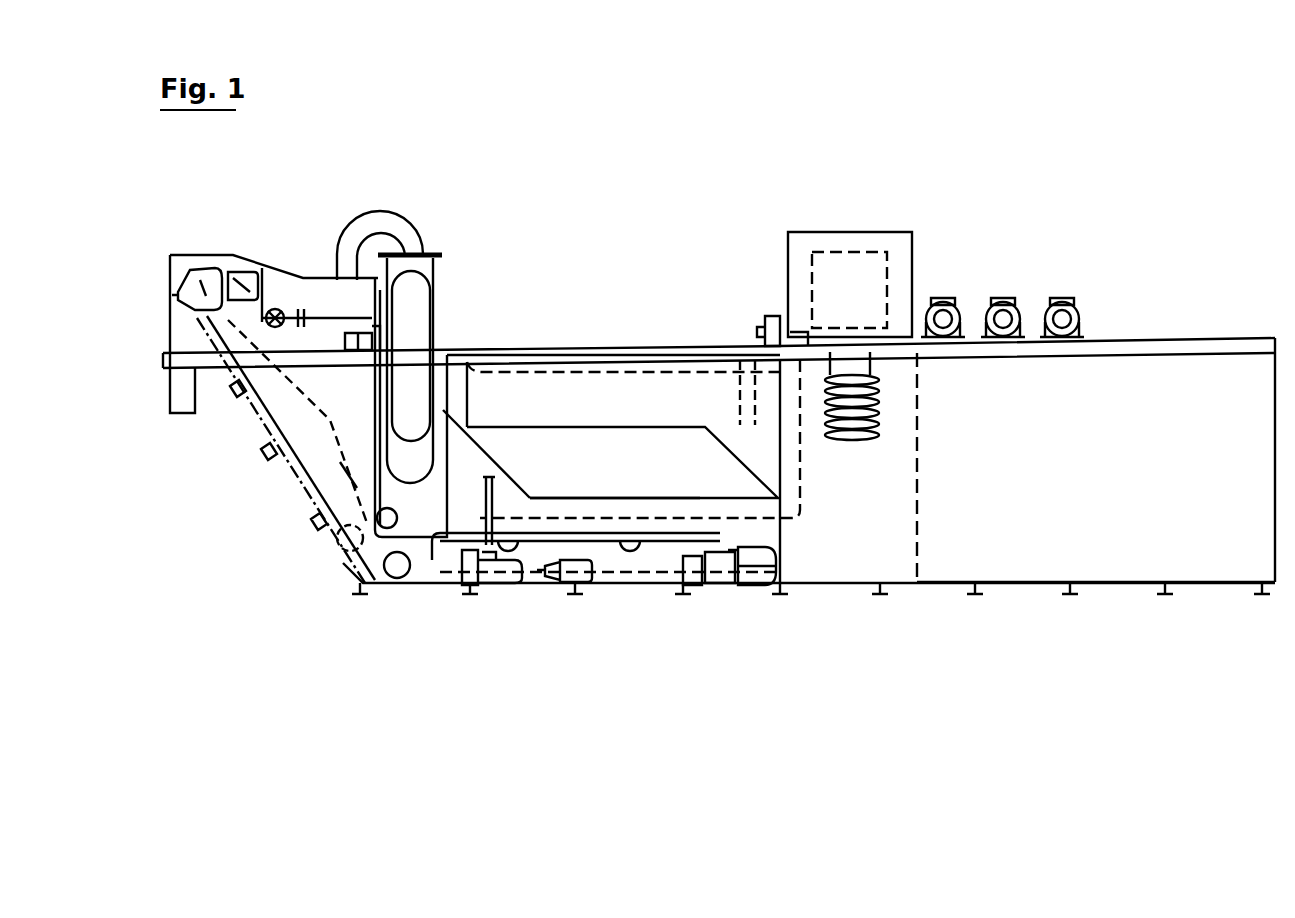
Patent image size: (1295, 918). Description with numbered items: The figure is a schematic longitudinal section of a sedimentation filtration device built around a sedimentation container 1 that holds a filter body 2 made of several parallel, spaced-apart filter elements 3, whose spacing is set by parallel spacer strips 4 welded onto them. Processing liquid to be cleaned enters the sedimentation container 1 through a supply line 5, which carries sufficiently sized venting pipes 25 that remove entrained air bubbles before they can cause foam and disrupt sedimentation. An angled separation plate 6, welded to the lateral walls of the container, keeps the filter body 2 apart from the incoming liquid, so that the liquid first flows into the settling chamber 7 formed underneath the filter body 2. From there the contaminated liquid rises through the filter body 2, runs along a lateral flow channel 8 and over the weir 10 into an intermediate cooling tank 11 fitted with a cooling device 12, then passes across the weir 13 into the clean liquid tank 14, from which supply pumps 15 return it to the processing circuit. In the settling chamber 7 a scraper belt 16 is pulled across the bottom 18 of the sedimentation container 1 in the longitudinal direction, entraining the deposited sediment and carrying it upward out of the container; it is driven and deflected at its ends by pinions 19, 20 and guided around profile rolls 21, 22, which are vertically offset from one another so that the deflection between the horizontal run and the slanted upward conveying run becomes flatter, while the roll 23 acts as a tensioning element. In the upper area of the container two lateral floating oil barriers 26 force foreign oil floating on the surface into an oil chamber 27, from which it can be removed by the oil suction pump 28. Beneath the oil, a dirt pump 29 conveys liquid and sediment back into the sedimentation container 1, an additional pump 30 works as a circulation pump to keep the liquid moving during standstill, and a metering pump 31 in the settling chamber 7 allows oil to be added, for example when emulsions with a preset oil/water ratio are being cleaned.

The sedimentation container 1 is at (602, 405).
The filter body 2 is at (611, 483).
The filter elements 3 is at (712, 432).
The spacer strips 4 is at (692, 441).
The supply line 5 is at (402, 332).
The angled separation plate 6 is at (491, 478).
The settling chamber 7 is at (527, 557).
The lateral flow channel 8 is at (735, 400).
The weir 10 is at (776, 365).
The intermediate cooling tank 11 is at (832, 513).
The cooling device 12 is at (812, 245).
The weir 13 is at (913, 365).
The clean liquid tank 14 is at (1081, 508).
The supply pumps 15 is at (1062, 305).
The scraper belt 16 is at (345, 462).
The bottom 18 is at (630, 583).
The pinion 19 is at (203, 312).
The pinion 20 is at (771, 553).
The profile roll 21 is at (352, 550).
The profile roll 22 is at (396, 568).
The roll 23 is at (270, 346).
The venting pipes 25 is at (371, 222).
The floating oil barriers 26 is at (633, 373).
The oil chamber 27 is at (440, 382).
The oil suction pump 28 is at (357, 340).
The dirt pump 29 is at (492, 571).
The additional pump 30 is at (697, 580).
The metering pump 31 is at (573, 568).